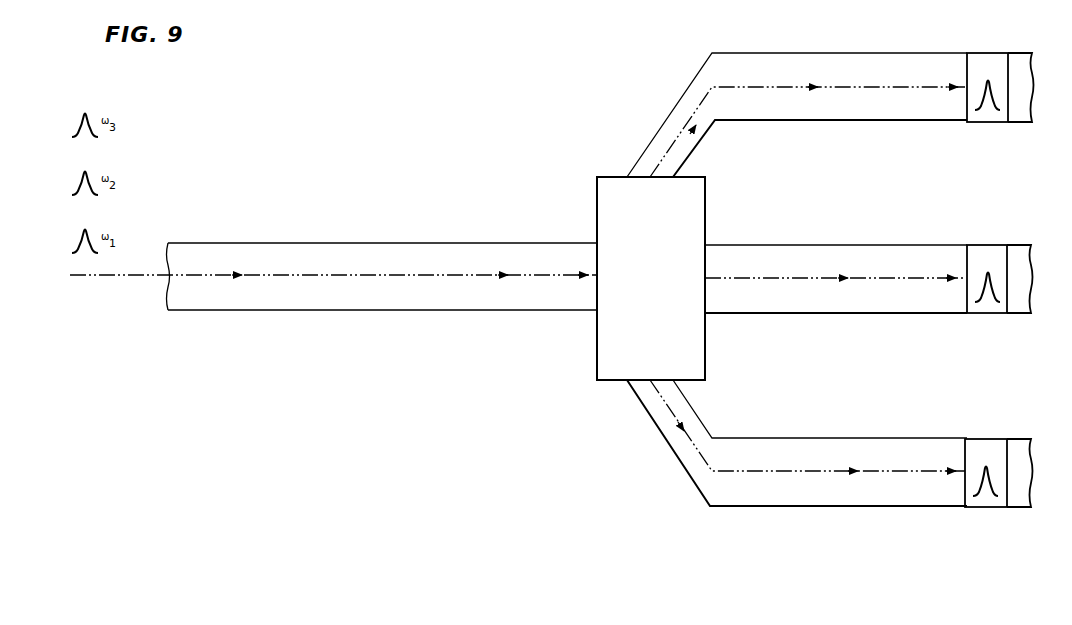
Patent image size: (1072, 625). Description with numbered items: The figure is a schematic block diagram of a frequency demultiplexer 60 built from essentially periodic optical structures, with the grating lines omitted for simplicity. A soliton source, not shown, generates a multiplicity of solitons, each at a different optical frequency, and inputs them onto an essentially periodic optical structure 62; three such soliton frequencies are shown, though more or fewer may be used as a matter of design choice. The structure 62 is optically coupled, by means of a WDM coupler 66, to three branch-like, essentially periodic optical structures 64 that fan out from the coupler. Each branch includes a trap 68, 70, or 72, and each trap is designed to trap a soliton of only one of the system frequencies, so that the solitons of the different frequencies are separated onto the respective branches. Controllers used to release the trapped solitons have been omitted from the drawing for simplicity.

The demultiplexer 60 is at (308, 126).
The essentially periodic optical structure 62 is at (378, 242).
The branch-like essentially periodic optical structures 64 is at (848, 122).
The WDM coupler 66 is at (606, 348).
The trap 68 is at (984, 123).
The trap 70 is at (986, 315).
The trap 72 is at (974, 450).